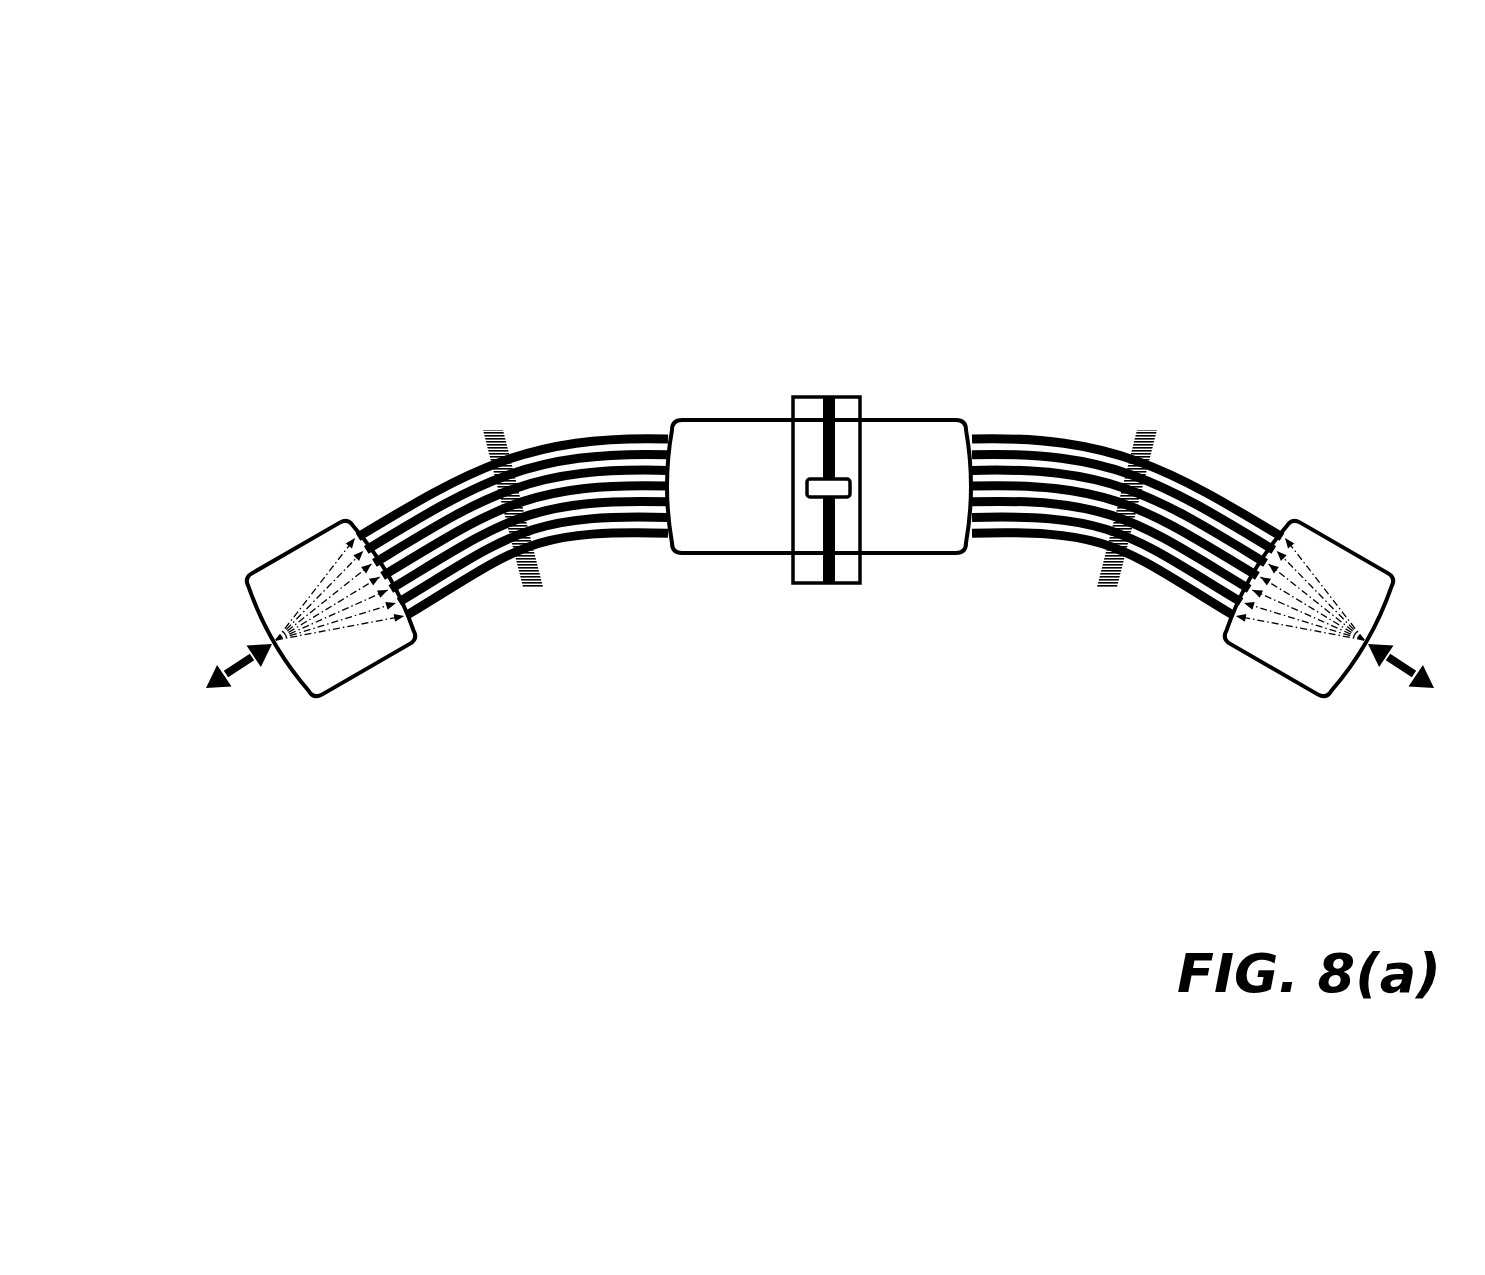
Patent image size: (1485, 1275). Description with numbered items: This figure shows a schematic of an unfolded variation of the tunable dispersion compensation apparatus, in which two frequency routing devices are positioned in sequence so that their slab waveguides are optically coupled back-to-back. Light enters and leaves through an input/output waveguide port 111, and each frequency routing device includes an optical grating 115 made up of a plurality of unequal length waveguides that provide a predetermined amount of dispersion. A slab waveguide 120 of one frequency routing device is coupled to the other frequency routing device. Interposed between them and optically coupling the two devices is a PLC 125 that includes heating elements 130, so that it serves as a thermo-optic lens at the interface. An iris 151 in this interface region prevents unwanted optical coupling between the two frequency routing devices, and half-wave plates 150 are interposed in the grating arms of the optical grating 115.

The input/output waveguide port 111 is at (214, 689).
The optical grating 115 is at (819, 463).
The slab waveguide 120 is at (672, 556).
The PLC 125 is at (853, 397).
The heating elements 130 is at (850, 497).
The half-wave plate 150 is at (528, 589).
The iris 151 is at (829, 583).